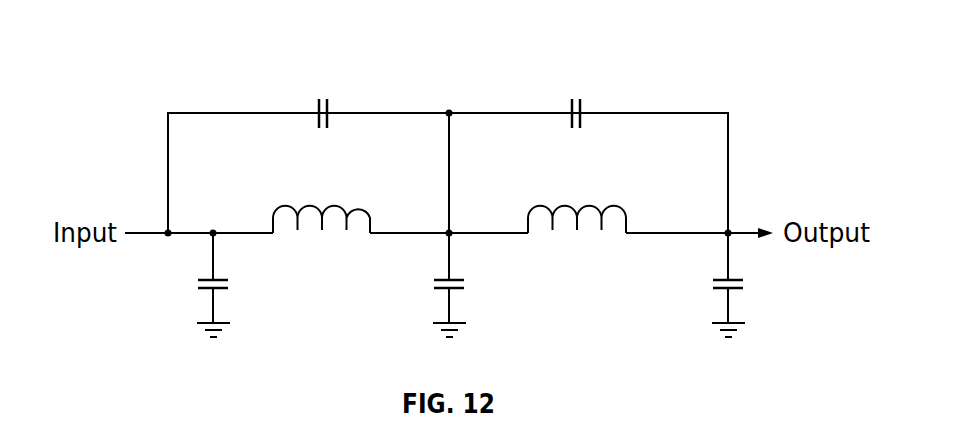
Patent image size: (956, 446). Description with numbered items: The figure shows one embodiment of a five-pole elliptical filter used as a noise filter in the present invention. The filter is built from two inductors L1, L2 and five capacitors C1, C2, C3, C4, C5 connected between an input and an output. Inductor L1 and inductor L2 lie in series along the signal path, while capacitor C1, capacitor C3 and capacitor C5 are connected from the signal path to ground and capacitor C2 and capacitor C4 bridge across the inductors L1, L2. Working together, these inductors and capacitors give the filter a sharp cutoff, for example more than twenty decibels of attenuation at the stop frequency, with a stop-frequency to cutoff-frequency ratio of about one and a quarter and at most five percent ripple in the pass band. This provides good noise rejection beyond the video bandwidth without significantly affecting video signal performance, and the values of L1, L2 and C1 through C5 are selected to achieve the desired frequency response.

The capacitor C1 is at (234, 285).
The capacitor C2 is at (322, 97).
The capacitor C3 is at (471, 285).
The capacitor C4 is at (575, 97).
The capacitor C5 is at (750, 285).
The inductor L1 is at (321, 197).
The inductor L2 is at (577, 197).